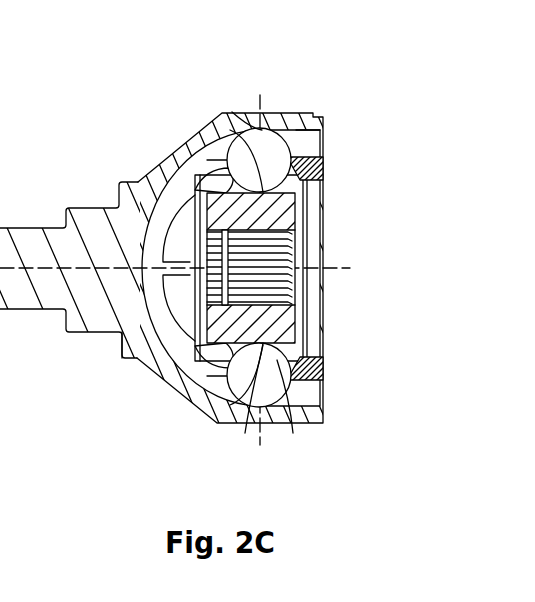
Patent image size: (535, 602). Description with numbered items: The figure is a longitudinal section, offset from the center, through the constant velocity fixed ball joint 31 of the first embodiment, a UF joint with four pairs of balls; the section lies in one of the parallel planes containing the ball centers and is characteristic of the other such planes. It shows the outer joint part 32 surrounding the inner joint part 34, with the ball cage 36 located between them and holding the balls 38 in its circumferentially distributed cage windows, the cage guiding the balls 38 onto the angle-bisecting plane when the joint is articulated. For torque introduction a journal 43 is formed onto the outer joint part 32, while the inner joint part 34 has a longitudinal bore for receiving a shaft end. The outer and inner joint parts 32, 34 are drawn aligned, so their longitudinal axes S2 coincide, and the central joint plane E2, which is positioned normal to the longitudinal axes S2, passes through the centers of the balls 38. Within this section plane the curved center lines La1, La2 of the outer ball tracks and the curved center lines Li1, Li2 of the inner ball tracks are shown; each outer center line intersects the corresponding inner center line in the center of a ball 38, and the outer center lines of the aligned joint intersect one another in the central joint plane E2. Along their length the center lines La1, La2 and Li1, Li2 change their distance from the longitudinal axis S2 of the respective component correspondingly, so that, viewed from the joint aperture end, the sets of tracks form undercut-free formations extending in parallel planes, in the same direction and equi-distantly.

The constant velocity fixed ball joint 31 is at (178, 78).
The outer joint part 32 is at (182, 152).
The inner joint part 34 is at (219, 118).
The ball cage 36 is at (205, 362).
The balls 38 is at (252, 143).
The journal 43 is at (32, 235).
The central joint plane E2 is at (261, 114).
The center line of outer ball track La1 is at (290, 120).
The center line of outer ball track La2 is at (262, 406).
The center line of inner ball track Li1 is at (315, 121).
The center line of inner ball track Li2 is at (297, 412).
The longitudinal axes S2 is at (122, 333).